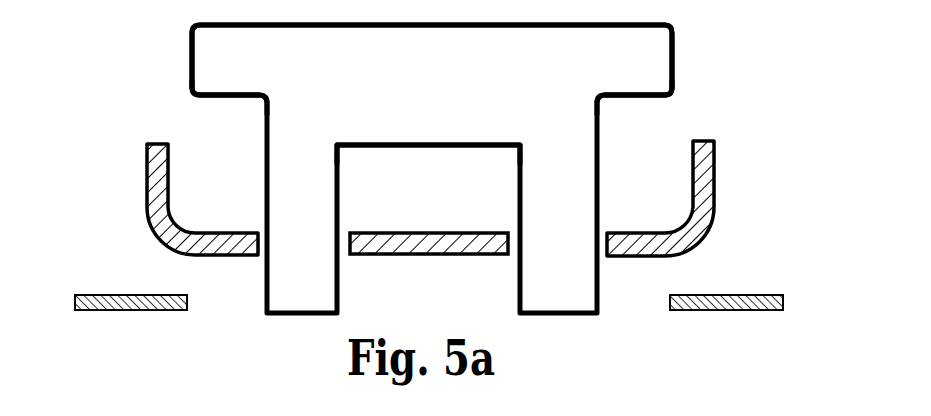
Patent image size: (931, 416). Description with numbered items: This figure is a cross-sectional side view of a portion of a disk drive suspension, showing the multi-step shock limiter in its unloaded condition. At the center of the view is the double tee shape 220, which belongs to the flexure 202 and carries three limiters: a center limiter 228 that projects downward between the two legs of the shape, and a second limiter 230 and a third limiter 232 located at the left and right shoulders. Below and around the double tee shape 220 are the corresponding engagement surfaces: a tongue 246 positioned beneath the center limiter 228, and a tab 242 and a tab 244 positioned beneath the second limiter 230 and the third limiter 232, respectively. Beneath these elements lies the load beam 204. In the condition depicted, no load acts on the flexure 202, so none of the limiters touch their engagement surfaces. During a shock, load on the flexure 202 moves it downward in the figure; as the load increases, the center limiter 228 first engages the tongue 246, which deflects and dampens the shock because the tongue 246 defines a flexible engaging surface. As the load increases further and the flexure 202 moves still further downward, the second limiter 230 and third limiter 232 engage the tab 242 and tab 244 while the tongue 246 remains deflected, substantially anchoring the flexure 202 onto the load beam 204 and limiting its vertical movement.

The flexure 202 is at (457, 90).
The double tee shape 220 is at (330, 62).
The center limiter 228 is at (430, 145).
The second limiter 230 is at (207, 95).
The third limiter 232 is at (638, 100).
The tab 242 is at (180, 244).
The tab 244 is at (653, 235).
The tongue 246 is at (430, 230).
The load beam 204 is at (132, 310).